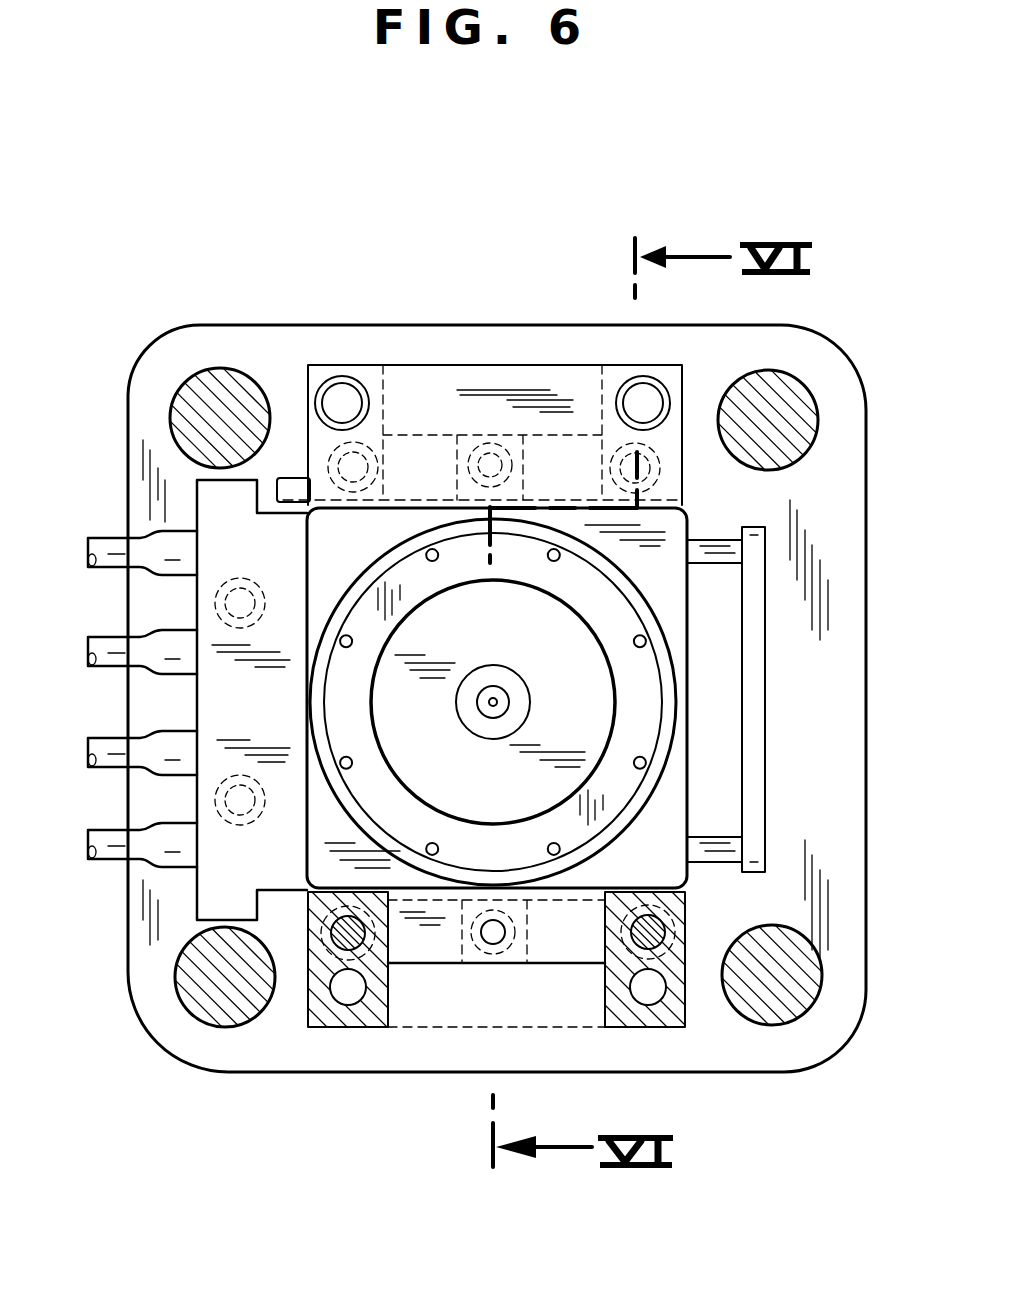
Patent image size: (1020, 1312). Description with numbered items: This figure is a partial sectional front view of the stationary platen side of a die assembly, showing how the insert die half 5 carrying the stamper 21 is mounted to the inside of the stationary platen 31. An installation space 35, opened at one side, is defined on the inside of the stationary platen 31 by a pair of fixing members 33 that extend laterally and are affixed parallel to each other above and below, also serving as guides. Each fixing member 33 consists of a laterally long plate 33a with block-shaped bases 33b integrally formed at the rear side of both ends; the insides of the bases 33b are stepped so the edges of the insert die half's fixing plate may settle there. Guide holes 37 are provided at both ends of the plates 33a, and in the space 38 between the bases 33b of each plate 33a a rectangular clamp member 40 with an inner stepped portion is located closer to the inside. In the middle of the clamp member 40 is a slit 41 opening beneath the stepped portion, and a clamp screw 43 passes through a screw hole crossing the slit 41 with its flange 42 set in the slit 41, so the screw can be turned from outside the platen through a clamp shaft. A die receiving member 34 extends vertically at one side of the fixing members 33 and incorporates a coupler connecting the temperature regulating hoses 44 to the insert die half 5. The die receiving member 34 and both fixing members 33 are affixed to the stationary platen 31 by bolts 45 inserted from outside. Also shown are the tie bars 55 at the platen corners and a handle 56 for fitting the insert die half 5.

The insert die half 5 is at (325, 555).
The stamper 21 is at (592, 734).
The stationary platen 31 is at (213, 342).
The fixing member 33 is at (468, 365).
The plate 33a is at (440, 400).
The base 33b is at (672, 375).
The die receiving member 34 is at (268, 708).
The installation space 35 is at (345, 880).
The guide hole 37 is at (648, 400).
The space 38 is at (402, 400).
The clamp member 40 is at (412, 400).
The slit 41 is at (490, 442).
The flange 42 is at (540, 435).
The clamp screw 43 is at (505, 445).
The temperature regulating hose 44 is at (110, 650).
The bolt 45 is at (650, 465).
The tie bar 55 is at (195, 405).
The handle 56 is at (755, 660).